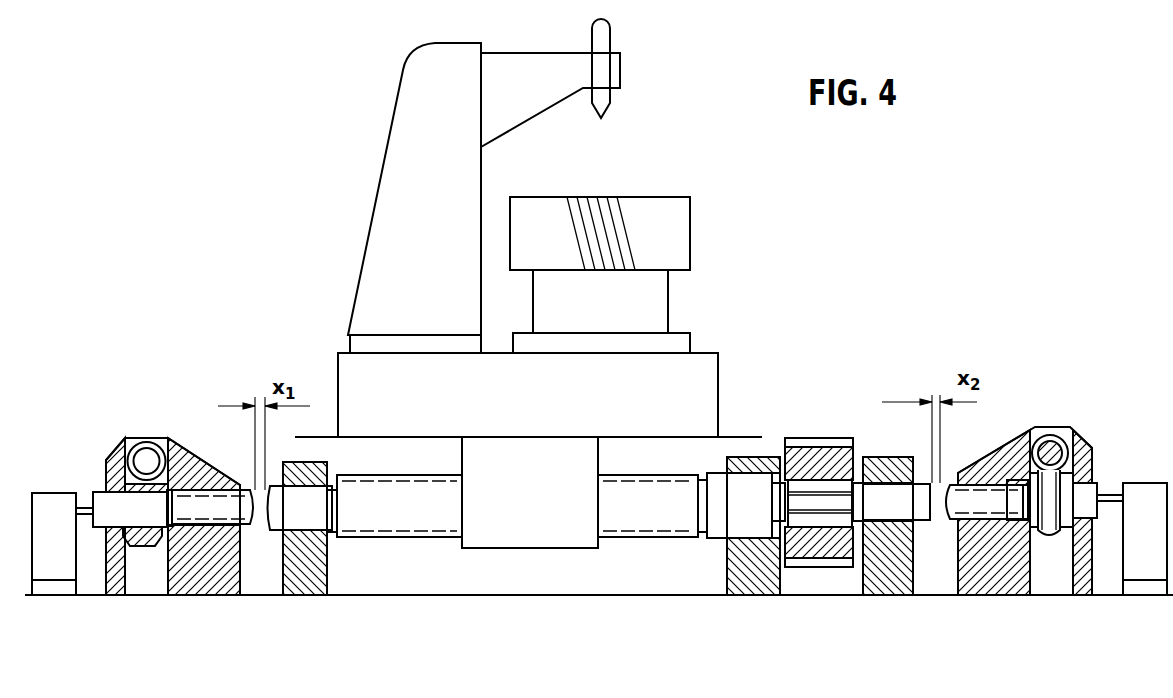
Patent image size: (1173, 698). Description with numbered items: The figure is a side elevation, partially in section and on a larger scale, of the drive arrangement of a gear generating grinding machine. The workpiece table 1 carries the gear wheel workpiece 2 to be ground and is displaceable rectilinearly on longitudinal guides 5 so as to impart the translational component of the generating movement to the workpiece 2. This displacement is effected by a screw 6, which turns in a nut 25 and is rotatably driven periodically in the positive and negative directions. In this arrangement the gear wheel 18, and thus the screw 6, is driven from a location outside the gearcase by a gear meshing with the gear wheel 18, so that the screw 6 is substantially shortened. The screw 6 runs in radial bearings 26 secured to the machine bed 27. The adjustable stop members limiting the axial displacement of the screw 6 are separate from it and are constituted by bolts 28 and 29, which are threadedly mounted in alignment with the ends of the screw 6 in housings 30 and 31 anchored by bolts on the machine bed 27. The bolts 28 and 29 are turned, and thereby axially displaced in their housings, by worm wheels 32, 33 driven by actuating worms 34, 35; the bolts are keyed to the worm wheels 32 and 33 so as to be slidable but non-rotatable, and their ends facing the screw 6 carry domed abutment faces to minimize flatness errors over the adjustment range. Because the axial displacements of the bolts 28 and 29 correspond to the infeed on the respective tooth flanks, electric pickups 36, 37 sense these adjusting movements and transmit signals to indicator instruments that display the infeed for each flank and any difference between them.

The workpiece table 1 is at (698, 370).
The gear wheel workpiece 2 is at (655, 212).
The longitudinal guides 5 is at (678, 455).
The screw 6 is at (415, 520).
The gear wheel 18 is at (815, 546).
The nut 25 is at (525, 530).
The radial bearings 26 is at (307, 580).
The machine bed 27 is at (630, 597).
The bolt 28 is at (105, 515).
The bolt 29 is at (1005, 502).
The housing 30 is at (205, 558).
The housing 31 is at (980, 558).
The worm wheel 32 is at (150, 545).
The worm wheel 33 is at (1052, 515).
The actuating worm 34 is at (146, 458).
The actuating worm 35 is at (1050, 443).
The electric pickup 36 is at (53, 508).
The electric pickup 37 is at (1137, 488).